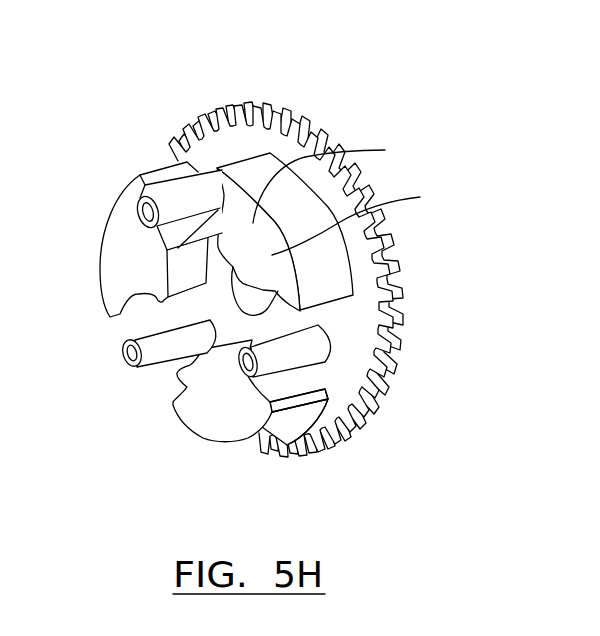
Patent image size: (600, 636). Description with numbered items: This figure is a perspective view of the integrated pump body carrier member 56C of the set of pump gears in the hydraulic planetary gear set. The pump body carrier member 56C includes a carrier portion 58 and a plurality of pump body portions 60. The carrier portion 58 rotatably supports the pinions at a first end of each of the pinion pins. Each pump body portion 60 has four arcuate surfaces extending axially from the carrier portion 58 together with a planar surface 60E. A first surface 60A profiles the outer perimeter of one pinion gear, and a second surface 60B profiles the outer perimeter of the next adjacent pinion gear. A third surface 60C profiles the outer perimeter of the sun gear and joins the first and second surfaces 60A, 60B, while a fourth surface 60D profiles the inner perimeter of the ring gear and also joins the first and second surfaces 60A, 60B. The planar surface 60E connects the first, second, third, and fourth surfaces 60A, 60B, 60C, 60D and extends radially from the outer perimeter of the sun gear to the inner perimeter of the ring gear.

The integrated pump body carrier member 56C is at (275, 275).
The carrier portion 58 is at (302, 120).
The pump body portion 60 is at (127, 248).
The first surface 60A is at (169, 182).
The second surface 60B is at (150, 294).
The third surface 60C is at (180, 267).
The fourth surface 60D is at (327, 276).
The planar surface 60E is at (130, 452).